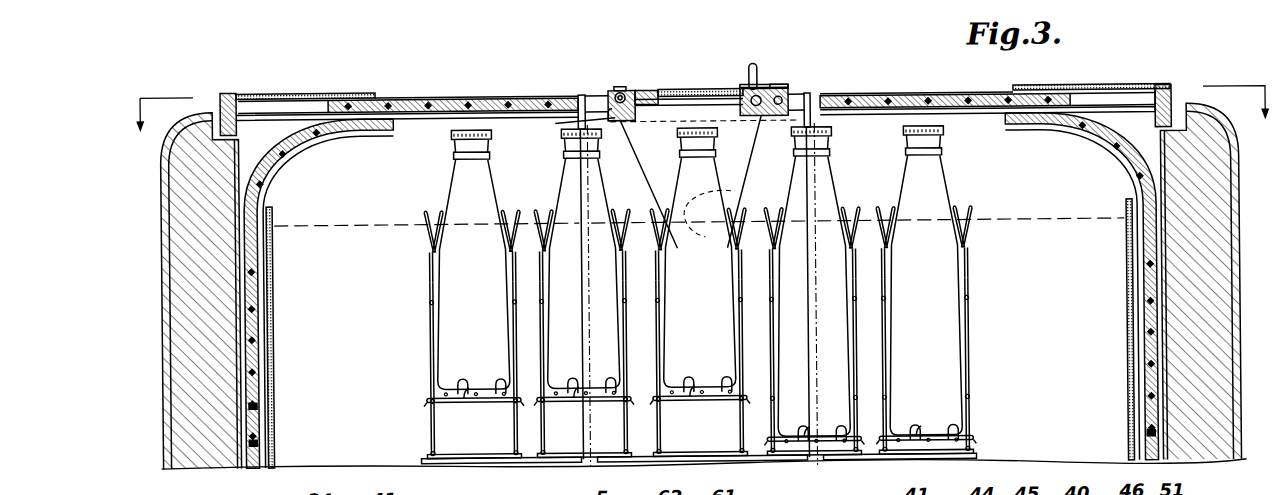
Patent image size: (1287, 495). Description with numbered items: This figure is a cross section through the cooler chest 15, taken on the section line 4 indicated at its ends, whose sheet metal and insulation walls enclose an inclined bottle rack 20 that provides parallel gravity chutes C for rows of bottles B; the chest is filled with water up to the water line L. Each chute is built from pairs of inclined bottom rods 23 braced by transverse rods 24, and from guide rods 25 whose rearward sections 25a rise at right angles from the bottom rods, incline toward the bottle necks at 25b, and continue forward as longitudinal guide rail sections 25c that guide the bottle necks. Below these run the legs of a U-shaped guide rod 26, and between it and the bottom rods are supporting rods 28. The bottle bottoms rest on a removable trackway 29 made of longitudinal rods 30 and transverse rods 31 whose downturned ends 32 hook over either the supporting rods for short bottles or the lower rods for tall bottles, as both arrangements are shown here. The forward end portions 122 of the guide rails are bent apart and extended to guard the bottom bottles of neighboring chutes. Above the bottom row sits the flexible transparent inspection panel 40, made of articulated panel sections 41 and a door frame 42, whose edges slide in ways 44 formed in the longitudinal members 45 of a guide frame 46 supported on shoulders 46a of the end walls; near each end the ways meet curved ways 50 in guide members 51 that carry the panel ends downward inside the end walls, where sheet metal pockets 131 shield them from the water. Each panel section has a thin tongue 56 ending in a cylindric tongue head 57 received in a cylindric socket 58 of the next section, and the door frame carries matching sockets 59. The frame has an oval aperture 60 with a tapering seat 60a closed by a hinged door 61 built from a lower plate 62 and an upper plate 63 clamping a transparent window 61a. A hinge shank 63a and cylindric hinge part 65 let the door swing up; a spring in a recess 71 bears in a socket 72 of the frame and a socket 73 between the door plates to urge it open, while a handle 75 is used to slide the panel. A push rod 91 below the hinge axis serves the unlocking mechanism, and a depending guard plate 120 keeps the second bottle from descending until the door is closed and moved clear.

The section line 4- 4 is at (696, 120).
The cooler chest 15 is at (1240, 193).
The inclined bottle rack 20 is at (695, 325).
The inclined rods 23 is at (515, 451).
The transverse intermediate rods 24 is at (427, 457).
The guide rods 25 is at (692, 308).
The rearward sections 25a is at (513, 343).
The inclined portions 25b is at (513, 262).
The longitudinal guide rail sections 25c is at (441, 207).
The U-shaped guide rod 26 is at (513, 301).
The supporting rods 28 is at (513, 402).
The trackway 29 is at (462, 392).
The longitudinal rods 30 is at (553, 387).
The transverse rods 31 is at (577, 399).
The downturned ends 32 is at (430, 400).
The inspection panel 40 is at (703, 83).
The panel sections 41 is at (433, 97).
The door frame 42 is at (775, 80).
The longitudinal ways 44 is at (302, 96).
The longitudinal members 45 is at (515, 96).
The guide frame 46 is at (407, 86).
The shoulders 46a is at (232, 128).
The curved ways 50 is at (267, 168).
The guide members 51 is at (297, 138).
The tongue 56 is at (253, 404).
The tongue head 57 is at (347, 117).
The cylindric socket 58 is at (253, 440).
The cylindric sockets 59 is at (612, 94).
The aperture 60 is at (780, 79).
The tapering seat 60a is at (777, 84).
The hinged door 61 is at (694, 71).
The transparent window 61a is at (688, 89).
The lower door plate 62 is at (650, 90).
The upper door plate 63 is at (644, 97).
The hinge shank 63a is at (633, 90).
The cylindric hinge part 65 is at (621, 90).
The recess 71 is at (575, 125).
The socket 72 is at (635, 92).
The socket 73 is at (623, 86).
The handle 75 is at (752, 68).
The push rod 91 is at (611, 121).
The guard plate 120 is at (659, 176).
The forward end portions 122 is at (420, 213).
The sheet metal pockets 131 is at (276, 268).
The bottles B is at (490, 172).
The chutes C is at (694, 308).
The water line L is at (306, 220).